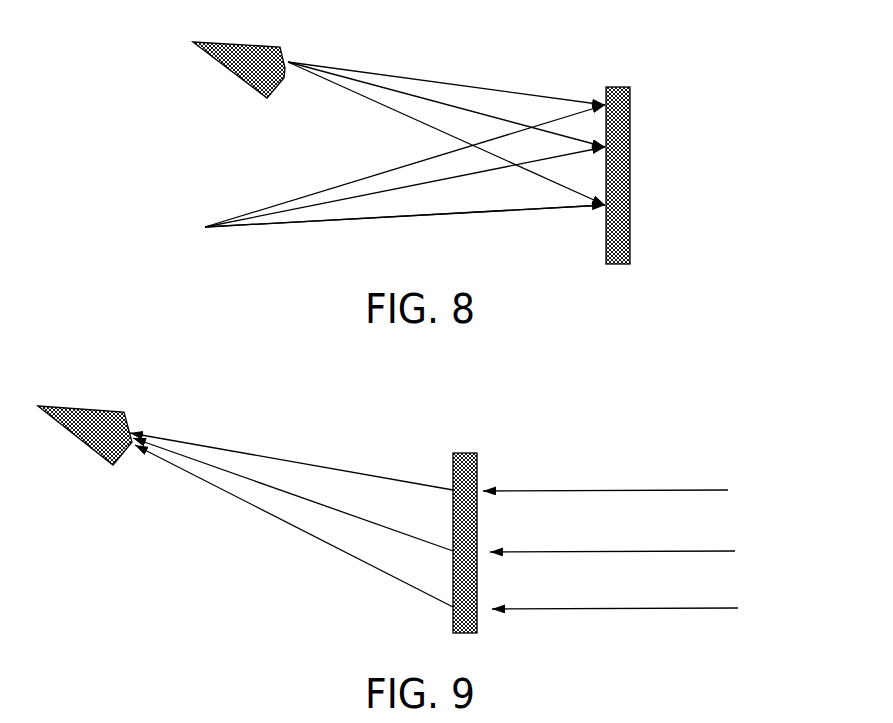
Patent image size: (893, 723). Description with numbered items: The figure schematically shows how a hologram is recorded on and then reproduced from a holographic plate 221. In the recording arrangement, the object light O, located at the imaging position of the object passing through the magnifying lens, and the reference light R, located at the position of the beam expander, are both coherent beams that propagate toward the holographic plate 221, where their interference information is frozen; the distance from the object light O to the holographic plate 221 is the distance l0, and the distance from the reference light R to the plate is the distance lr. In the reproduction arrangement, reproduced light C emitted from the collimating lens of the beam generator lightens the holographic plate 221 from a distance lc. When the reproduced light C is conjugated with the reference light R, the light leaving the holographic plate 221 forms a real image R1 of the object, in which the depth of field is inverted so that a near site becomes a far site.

In FIG. 8, the holographic plate 221 is at (643, 175).
In FIG. 9, the holographic plate 221 is at (465, 522).
In FIG. 8, the object light O is at (226, 67).
In FIG. 8, the reference light R is at (393, 172).
In FIG. 9, the real image R1 is at (245, 483).
In FIG. 9, the reproduced light C is at (633, 521).
In FIG. 8, the distance from object light to holographic plate l0 is at (446, 133).
In FIG. 8, the distance from reference light to holographic plate lr is at (405, 206).
In FIG. 9, the distance from reproduced light to holographic plate lc is at (615, 628).